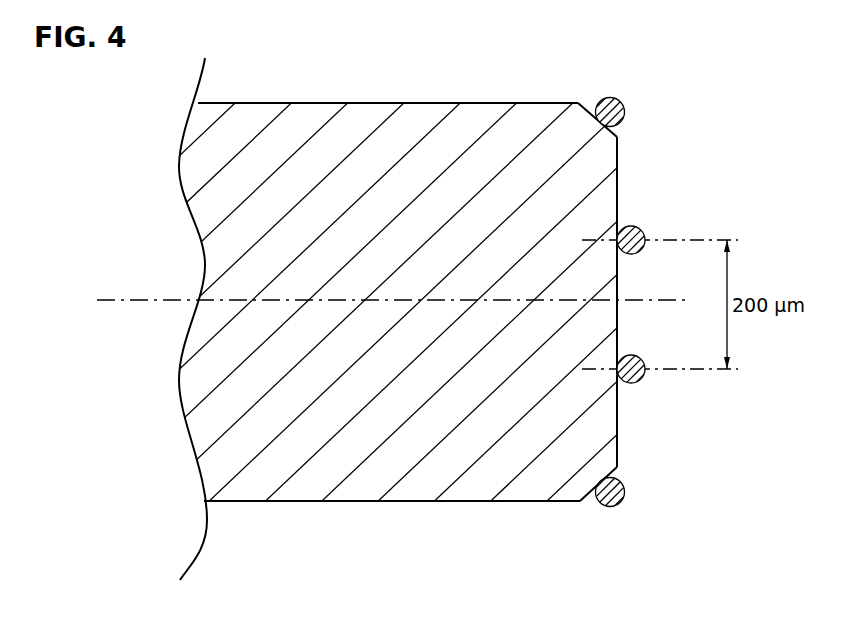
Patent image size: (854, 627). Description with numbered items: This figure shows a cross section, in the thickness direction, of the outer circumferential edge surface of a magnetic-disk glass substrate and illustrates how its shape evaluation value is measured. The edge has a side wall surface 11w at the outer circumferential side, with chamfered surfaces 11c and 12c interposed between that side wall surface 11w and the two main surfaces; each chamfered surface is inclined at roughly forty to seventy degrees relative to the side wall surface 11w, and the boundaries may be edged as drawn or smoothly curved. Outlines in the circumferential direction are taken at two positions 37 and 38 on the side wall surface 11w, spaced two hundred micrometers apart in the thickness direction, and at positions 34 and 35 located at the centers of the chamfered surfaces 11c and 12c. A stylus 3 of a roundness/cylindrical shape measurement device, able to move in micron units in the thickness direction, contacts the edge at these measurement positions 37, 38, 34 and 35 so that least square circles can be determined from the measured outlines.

The stylus 3 is at (626, 299).
The chamfered surface 11c is at (618, 133).
The side wall surface 11w is at (618, 187).
The chamfered surface 12c is at (618, 470).
The measurement position 34 is at (595, 128).
The measurement position 35 is at (594, 484).
The measurement position 37 is at (612, 239).
The measurement position 38 is at (612, 366).